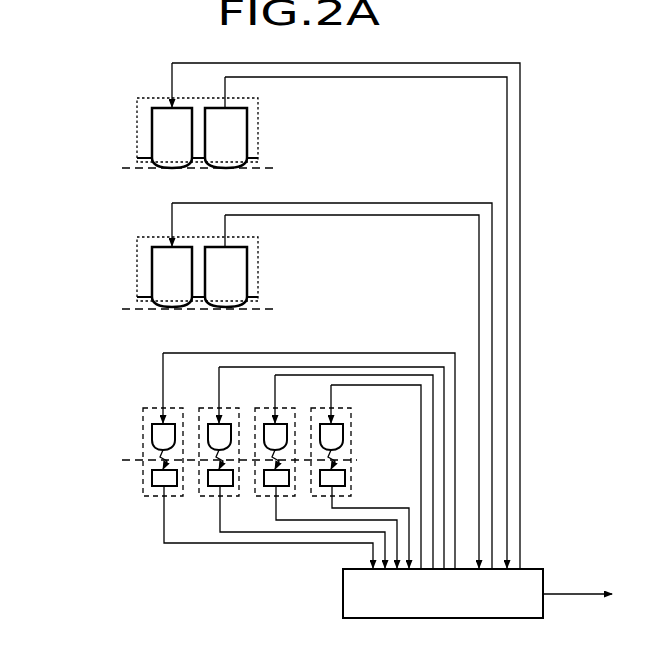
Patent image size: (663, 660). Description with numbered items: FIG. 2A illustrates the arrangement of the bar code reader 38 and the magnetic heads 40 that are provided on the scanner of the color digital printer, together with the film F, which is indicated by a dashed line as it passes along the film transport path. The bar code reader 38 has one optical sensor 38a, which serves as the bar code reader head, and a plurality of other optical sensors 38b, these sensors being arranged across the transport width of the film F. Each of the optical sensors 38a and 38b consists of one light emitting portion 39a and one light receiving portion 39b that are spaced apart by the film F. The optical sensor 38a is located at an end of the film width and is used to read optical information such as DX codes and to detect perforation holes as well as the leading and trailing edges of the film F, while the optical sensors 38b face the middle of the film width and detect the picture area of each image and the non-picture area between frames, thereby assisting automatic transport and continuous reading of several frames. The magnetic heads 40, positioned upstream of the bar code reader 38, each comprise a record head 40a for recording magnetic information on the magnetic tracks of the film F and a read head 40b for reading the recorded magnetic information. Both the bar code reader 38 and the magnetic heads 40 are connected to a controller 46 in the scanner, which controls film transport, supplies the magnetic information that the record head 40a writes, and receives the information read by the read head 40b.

The magnetic head 40 is at (284, 316).
The record head 40a is at (170, 148).
The read head 40b is at (224, 145).
The film F is at (277, 168).
The bar code reader 38 is at (246, 461).
The optical sensor 38a is at (143, 440).
The optical sensors 38b is at (240, 421).
The light emitting portion 39a is at (222, 436).
The light receiving portion 39b is at (370, 477).
The controller 46 is at (343, 598).